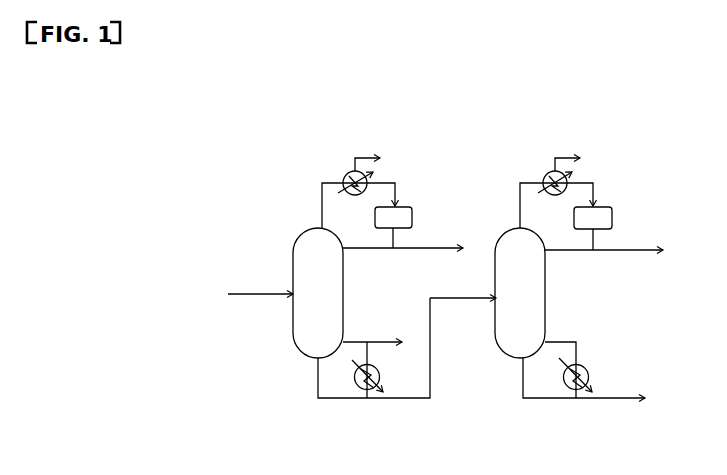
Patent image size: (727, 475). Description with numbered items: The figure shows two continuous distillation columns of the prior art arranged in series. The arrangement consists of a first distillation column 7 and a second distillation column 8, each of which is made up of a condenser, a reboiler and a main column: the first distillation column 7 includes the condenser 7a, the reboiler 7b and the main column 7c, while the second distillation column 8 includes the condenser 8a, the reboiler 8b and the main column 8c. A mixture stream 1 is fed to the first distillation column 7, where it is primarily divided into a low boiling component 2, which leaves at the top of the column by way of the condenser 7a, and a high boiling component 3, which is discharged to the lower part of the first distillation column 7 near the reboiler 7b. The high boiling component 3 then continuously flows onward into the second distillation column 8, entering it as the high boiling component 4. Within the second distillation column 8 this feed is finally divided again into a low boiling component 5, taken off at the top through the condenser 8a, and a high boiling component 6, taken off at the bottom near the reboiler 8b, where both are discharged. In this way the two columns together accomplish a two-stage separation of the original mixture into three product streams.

The mixture stream 1 is at (260, 283).
The low boiling component 2 is at (403, 237).
The high boiling component 3 is at (364, 353).
The high boiling component 4 is at (463, 286).
The low boiling component 5 is at (604, 239).
The high boiling component 6 is at (584, 378).
The first distillation column 7 is at (350, 114).
The condenser 7a is at (365, 200).
The reboiler 7b is at (372, 389).
The main column 7c is at (298, 225).
The second distillation column 8 is at (562, 114).
The condenser 8a is at (565, 201).
The reboiler 8b is at (568, 386).
The main column 8c is at (500, 225).